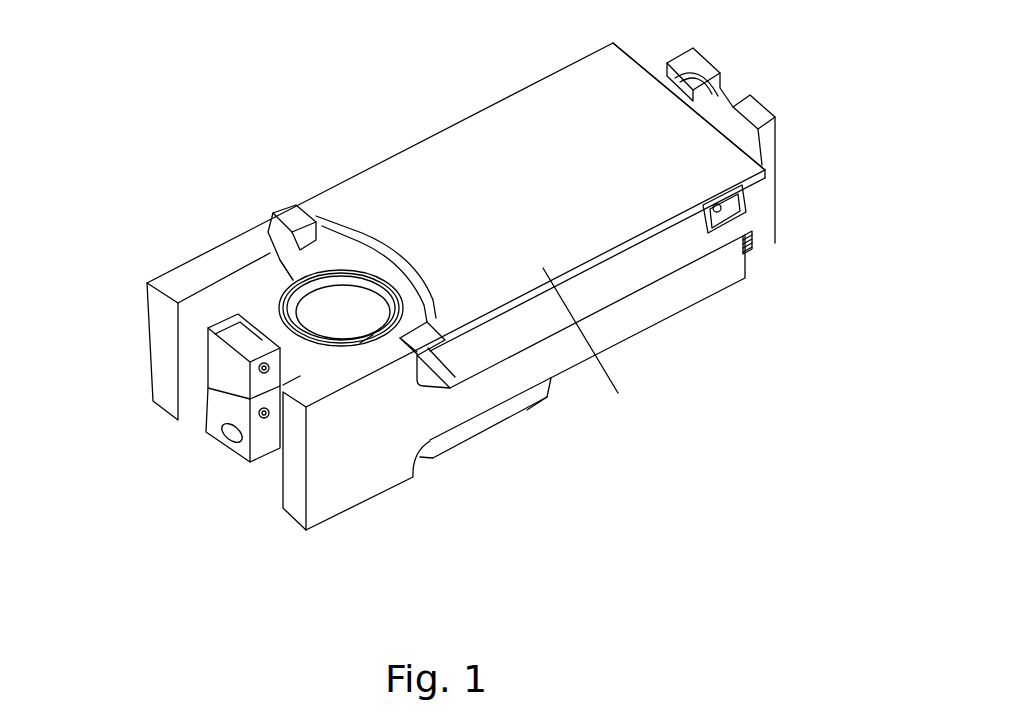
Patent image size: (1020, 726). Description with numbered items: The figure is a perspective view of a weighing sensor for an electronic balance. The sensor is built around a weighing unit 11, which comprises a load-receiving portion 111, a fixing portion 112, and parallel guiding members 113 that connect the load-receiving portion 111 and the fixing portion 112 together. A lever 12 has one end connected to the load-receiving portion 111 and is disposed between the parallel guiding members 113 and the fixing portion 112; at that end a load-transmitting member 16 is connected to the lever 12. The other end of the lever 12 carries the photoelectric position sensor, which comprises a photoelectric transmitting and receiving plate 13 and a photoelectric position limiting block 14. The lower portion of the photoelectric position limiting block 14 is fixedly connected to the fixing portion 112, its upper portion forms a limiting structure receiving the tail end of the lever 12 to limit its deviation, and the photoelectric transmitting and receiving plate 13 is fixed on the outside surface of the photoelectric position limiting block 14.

The weighing unit 11 is at (400, 113).
The load-receiving portion 111 is at (781, 189).
The fixing portion 112 is at (337, 468).
The parallel guiding members 113 is at (535, 237).
The lever 12 is at (730, 212).
The photoelectric transmitting and receiving plate 13 is at (182, 419).
The photoelectric position limiting block 14 is at (207, 341).
The load-transmitting member 16 is at (719, 72).